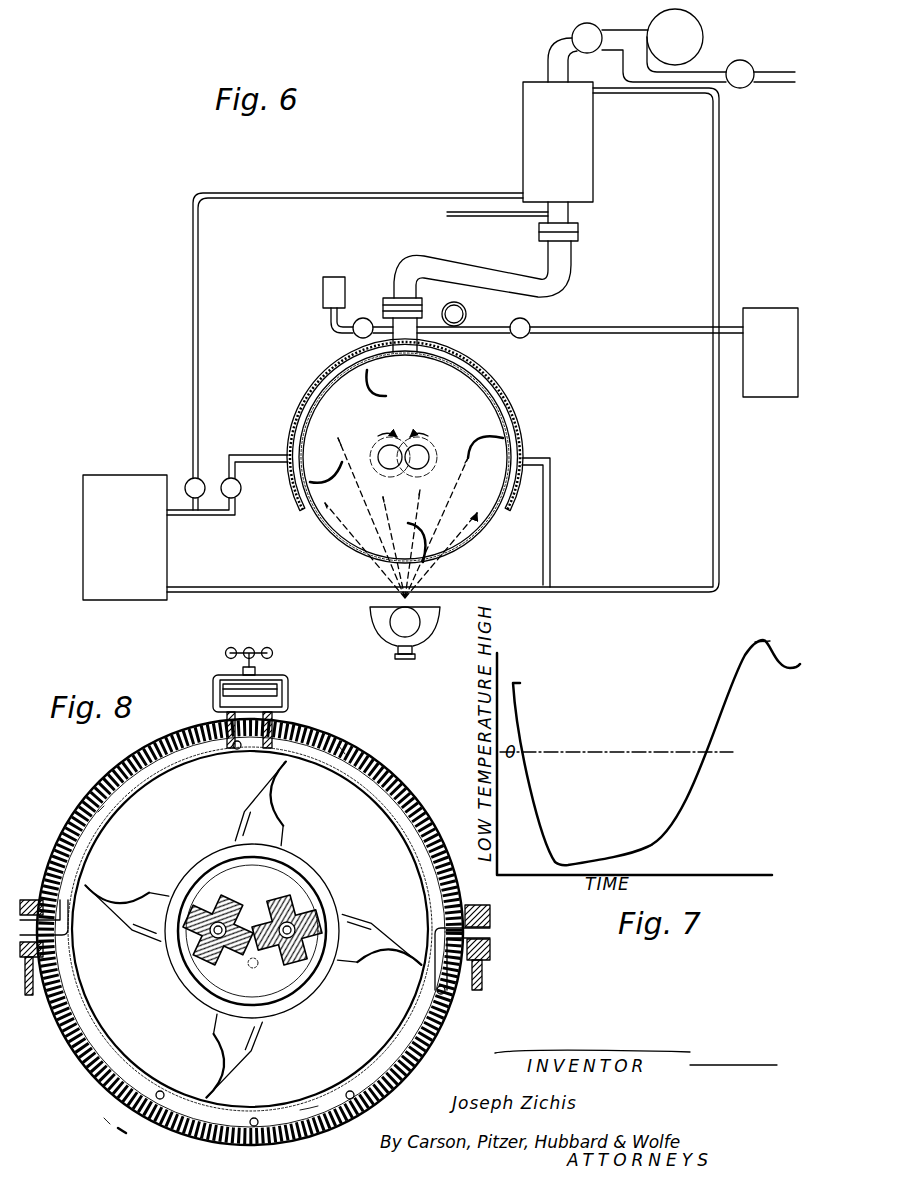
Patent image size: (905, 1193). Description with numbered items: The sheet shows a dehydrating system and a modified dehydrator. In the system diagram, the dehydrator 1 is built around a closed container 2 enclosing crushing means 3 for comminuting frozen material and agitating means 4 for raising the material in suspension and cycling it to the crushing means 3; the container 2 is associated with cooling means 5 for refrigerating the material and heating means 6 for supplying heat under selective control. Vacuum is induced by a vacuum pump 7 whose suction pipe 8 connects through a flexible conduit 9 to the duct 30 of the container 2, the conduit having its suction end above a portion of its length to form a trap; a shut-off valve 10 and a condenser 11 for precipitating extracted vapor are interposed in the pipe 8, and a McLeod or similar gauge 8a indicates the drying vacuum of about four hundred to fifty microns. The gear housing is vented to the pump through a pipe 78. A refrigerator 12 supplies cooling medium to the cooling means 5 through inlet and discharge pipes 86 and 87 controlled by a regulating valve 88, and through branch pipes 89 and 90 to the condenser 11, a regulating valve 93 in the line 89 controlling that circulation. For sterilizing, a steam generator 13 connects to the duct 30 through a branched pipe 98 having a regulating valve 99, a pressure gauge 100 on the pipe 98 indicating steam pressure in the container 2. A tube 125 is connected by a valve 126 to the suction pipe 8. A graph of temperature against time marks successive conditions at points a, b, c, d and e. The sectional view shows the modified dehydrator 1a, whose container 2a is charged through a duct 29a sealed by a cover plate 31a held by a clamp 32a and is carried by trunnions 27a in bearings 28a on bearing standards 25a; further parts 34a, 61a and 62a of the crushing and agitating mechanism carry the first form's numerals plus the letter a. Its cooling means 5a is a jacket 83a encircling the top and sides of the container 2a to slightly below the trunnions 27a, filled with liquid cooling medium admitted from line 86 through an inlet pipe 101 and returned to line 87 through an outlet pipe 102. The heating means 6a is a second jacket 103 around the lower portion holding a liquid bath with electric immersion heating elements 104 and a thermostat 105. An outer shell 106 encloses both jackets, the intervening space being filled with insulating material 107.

In FIG. 6, the dehydrator 1 is at (320, 362).
In FIG. 6, the container 2 is at (512, 414).
In FIG. 6, the crushing means 3 is at (414, 425).
In FIG. 8, the crushing means 3 is at (258, 904).
In FIG. 6, the agitating means 4 is at (489, 428).
In FIG. 8, the agitating means 4 is at (345, 906).
In FIG. 6, the cooling means 5 is at (297, 401).
In FIG. 6, the heating means 6 is at (370, 609).
In FIG. 6, the vacuum pump 7 is at (703, 38).
In FIG. 6, the suction pipe 8 is at (630, 30).
In FIG. 6, the gauge 8a is at (337, 277).
In FIG. 6, the flexible conduit 9 is at (493, 268).
In FIG. 6, the shut-off valve 10 is at (587, 23).
In FIG. 6, the condenser 11 is at (593, 158).
In FIG. 6, the refrigerator 12 is at (112, 481).
In FIG. 6, the steam generator 13 is at (752, 315).
In FIG. 6, the duct 30 is at (404, 322).
In FIG. 6, the pipe 78 is at (470, 216).
In FIG. 6, the inlet pipe 86 is at (236, 516).
In FIG. 6, the discharge pipe 87 is at (551, 522).
In FIG. 6, the regulating valve 88 is at (240, 496).
In FIG. 6, the branch pipe 89 is at (198, 360).
In FIG. 6, the branch pipe 90 is at (721, 224).
In FIG. 6, the regulating valve 93 is at (202, 479).
In FIG. 6, the branched pipe 98 is at (486, 333).
In FIG. 6, the regulating valve 99 is at (531, 331).
In FIG. 6, the pressure gauge 100 is at (468, 306).
In FIG. 6, the tube 125 is at (768, 72).
In FIG. 6, the valve 126 is at (745, 88).
In FIG. 7, the curve point a is at (522, 683).
In FIG. 7, the curve point b is at (562, 850).
In FIG. 7, the curve point c is at (646, 836).
In FIG. 7, the curve point d is at (764, 640).
In FIG. 7, the curve point e is at (788, 672).
In FIG. 8, the dehydrator 1a is at (393, 772).
In FIG. 8, the container 2a is at (390, 822).
In FIG. 8, the cooling means 5a is at (396, 791).
In FIG. 8, the heating means 6a is at (309, 1108).
In FIG. 8, the bearing standard 25a is at (483, 973).
In FIG. 8, the trunnion 27a is at (480, 932).
In FIG. 8, the bearing 28a is at (472, 912).
In FIG. 8, the duct 29a is at (238, 749).
In FIG. 8, the cover plate 31a is at (228, 690).
In FIG. 8, the clamp 32a is at (218, 678).
In FIG. 8, the shaft 34a is at (268, 961).
In FIG. 8, the blade 61a is at (277, 773).
In FIG. 8, the hub ring 62a is at (212, 857).
In FIG. 8, the jacket 83a is at (338, 748).
In FIG. 8, the inlet pipe 101 is at (100, 813).
In FIG. 8, the outlet pipe 102 is at (456, 993).
In FIG. 8, the second jacket 103 is at (105, 1120).
In FIG. 8, the electric immersion heating elements 104 is at (163, 1089).
In FIG. 8, the thermostat 105 is at (253, 1117).
In FIG. 8, the outer shell 106 is at (122, 1130).
In FIG. 8, the insulating material 107 is at (85, 1098).